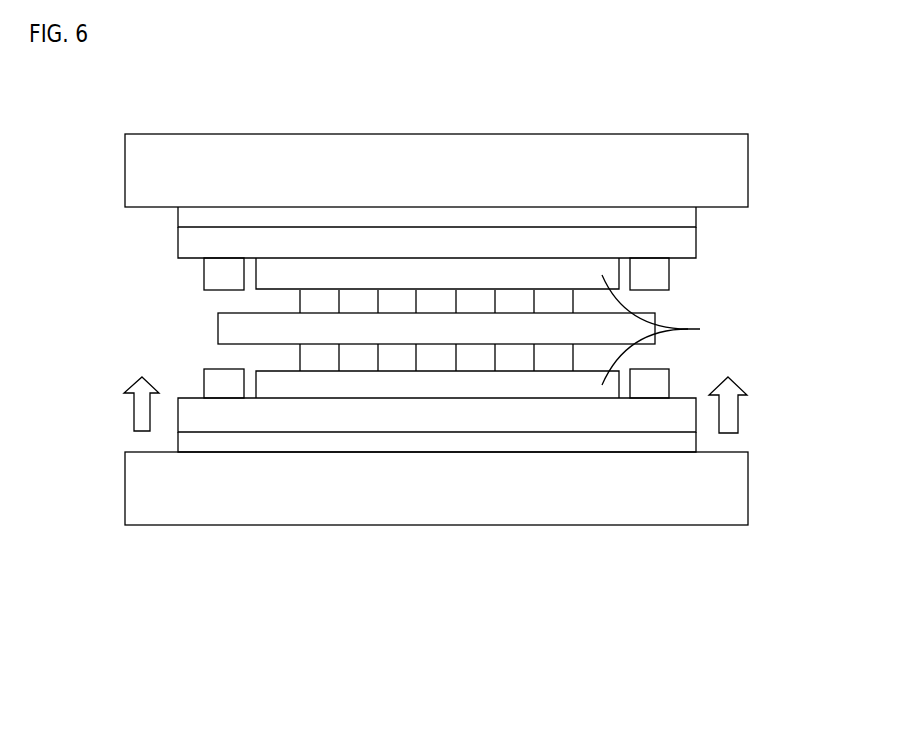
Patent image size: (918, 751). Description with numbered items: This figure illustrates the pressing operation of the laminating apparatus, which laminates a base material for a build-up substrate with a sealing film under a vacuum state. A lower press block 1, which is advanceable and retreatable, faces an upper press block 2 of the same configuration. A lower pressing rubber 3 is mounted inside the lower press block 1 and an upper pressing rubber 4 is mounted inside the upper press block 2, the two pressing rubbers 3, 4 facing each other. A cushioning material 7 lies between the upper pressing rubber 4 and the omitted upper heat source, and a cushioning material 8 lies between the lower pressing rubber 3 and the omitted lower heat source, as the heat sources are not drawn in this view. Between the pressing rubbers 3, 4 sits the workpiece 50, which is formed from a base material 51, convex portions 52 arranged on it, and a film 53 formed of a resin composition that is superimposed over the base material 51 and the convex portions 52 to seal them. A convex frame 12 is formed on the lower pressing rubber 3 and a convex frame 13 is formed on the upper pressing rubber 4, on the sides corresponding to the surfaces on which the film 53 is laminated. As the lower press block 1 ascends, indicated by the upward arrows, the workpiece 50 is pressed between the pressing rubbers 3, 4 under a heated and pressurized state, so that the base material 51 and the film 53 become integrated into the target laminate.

The lower press block 1 is at (735, 487).
The upper press block 2 is at (735, 177).
The lower pressing rubber 3 is at (393, 418).
The upper pressing rubber 4 is at (686, 245).
The cushioning material 7 is at (682, 220).
The cushioning material 8 is at (512, 441).
The convex frame 12 is at (690, 380).
The convex frame 13 is at (657, 277).
The workpiece 50 is at (293, 404).
The base material 51 is at (232, 327).
The convex portions 52 is at (310, 304).
The film 53 is at (671, 330).